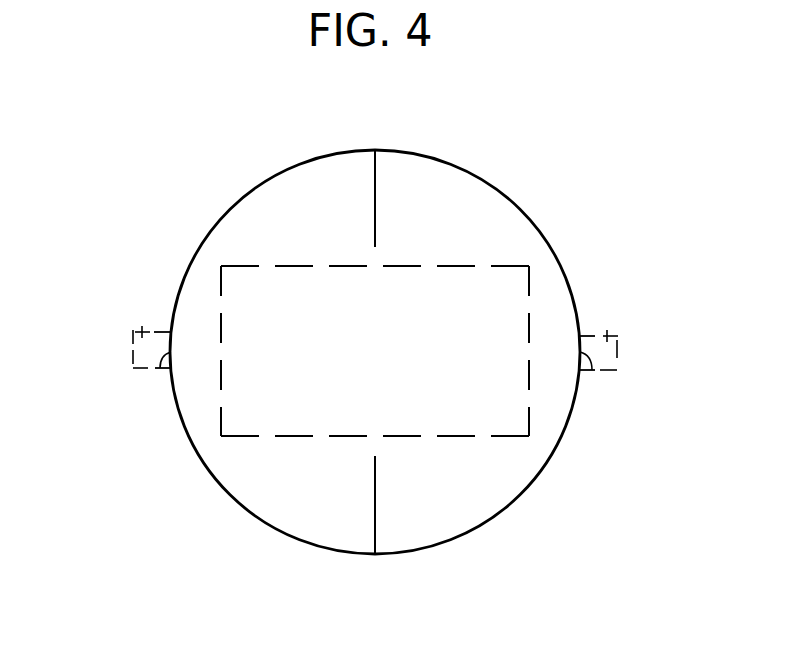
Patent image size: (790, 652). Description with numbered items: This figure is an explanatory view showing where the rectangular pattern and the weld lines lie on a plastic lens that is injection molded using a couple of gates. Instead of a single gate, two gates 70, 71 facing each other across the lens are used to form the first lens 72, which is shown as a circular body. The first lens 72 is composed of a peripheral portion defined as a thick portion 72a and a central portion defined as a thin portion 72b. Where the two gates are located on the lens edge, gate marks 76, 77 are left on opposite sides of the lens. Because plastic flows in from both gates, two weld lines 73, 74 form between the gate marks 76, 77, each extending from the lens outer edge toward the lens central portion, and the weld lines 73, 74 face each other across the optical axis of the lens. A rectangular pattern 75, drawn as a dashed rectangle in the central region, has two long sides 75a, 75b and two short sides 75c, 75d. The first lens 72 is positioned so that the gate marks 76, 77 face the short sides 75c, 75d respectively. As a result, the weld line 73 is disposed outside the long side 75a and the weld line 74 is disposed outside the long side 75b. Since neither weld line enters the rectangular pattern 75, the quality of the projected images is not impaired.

The gate 70 is at (146, 325).
The gate 71 is at (607, 326).
The first lens 72 is at (188, 447).
The thick portion 72a is at (323, 505).
The thin portion 72b is at (342, 353).
The weld line 73 is at (377, 186).
The weld line 74 is at (376, 507).
The rectangular pattern 75 is at (478, 263).
The long side 75a is at (398, 262).
The long side 75b is at (428, 440).
The short side 75c is at (221, 382).
The short side 75d is at (529, 385).
The gate mark 76 is at (160, 368).
The gate mark 77 is at (592, 370).